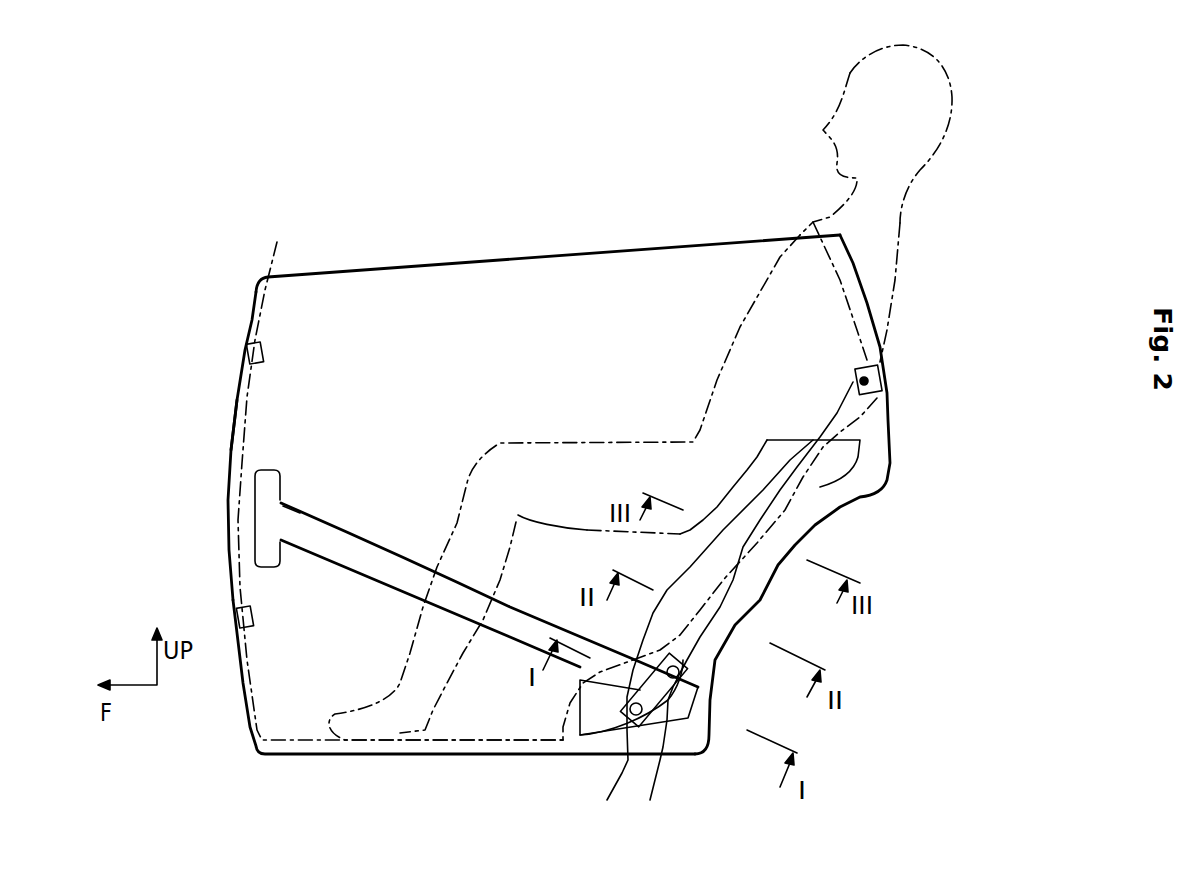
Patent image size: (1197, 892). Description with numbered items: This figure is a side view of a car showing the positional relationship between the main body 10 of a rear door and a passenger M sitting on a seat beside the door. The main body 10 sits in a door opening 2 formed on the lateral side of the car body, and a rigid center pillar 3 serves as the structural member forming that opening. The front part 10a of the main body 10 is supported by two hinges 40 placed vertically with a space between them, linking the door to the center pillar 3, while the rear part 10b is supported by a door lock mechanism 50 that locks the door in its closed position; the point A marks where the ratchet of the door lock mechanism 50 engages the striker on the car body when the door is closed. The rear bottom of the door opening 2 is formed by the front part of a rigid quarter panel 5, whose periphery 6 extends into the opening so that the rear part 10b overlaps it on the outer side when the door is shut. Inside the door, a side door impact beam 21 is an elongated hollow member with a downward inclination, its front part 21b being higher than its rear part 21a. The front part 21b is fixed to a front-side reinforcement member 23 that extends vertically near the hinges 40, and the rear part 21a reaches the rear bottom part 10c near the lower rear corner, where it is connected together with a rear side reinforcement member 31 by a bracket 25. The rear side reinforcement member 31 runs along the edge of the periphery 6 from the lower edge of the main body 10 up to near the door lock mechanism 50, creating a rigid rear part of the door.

The main body 10 is at (500, 217).
The front part 10a is at (247, 318).
The rear part 10b is at (800, 510).
The rear bottom part 10c is at (570, 732).
The door opening 2 is at (287, 645).
The center pillar 3 is at (237, 483).
The quarter panel 5 is at (977, 288).
The periphery 6 is at (723, 613).
The side door impact beam 21 is at (353, 550).
The rear part 21a is at (660, 760).
The front part 21b is at (300, 523).
The front-side reinforcement member 23 is at (268, 485).
The bracket 25 is at (630, 722).
The rear side reinforcement member 31 is at (820, 486).
The hinges 40 is at (247, 357).
The door lock mechanism 50 is at (885, 385).
The point A is at (882, 376).
The passenger M is at (903, 227).